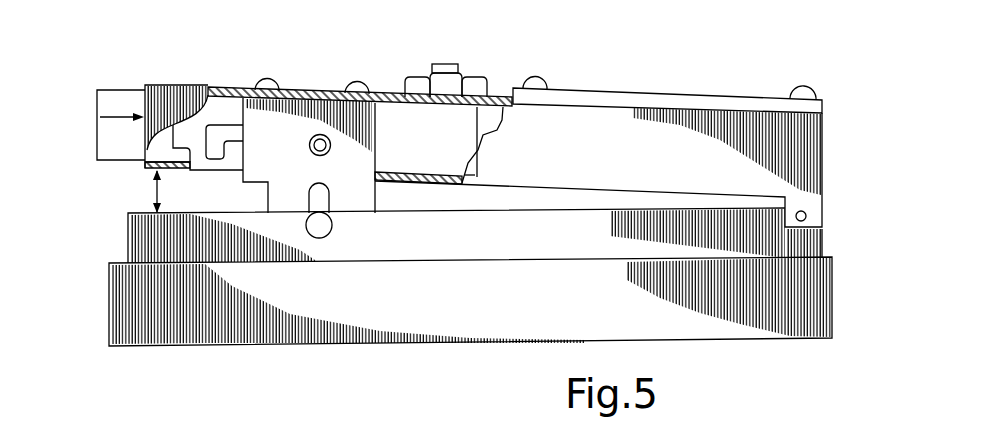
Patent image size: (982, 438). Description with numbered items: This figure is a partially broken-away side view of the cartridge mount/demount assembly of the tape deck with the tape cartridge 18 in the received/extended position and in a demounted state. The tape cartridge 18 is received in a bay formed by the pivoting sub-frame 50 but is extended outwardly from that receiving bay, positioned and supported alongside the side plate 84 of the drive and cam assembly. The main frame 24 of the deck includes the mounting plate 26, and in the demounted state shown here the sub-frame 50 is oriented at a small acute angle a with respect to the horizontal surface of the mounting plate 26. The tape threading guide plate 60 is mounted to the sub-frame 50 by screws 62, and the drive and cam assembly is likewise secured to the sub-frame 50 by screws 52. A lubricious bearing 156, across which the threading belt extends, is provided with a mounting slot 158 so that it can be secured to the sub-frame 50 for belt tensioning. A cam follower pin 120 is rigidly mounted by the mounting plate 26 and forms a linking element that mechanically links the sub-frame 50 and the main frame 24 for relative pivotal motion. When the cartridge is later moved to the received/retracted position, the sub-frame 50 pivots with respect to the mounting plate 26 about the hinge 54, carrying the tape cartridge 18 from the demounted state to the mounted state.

The tape cartridge 18 is at (112, 128).
The main frame 24 is at (579, 321).
The mounting plate 26 is at (577, 245).
The sub-frame 50 is at (667, 175).
The screws 52 is at (262, 80).
The hinge 54 is at (806, 212).
The tape threading guide plate 60 is at (632, 98).
The screws 62 is at (535, 80).
The side plate 84 is at (220, 115).
The cam follower pin 120 is at (327, 229).
The bearing 156 is at (462, 80).
The mounting slot 158 is at (443, 66).
The acute angle a is at (148, 191).